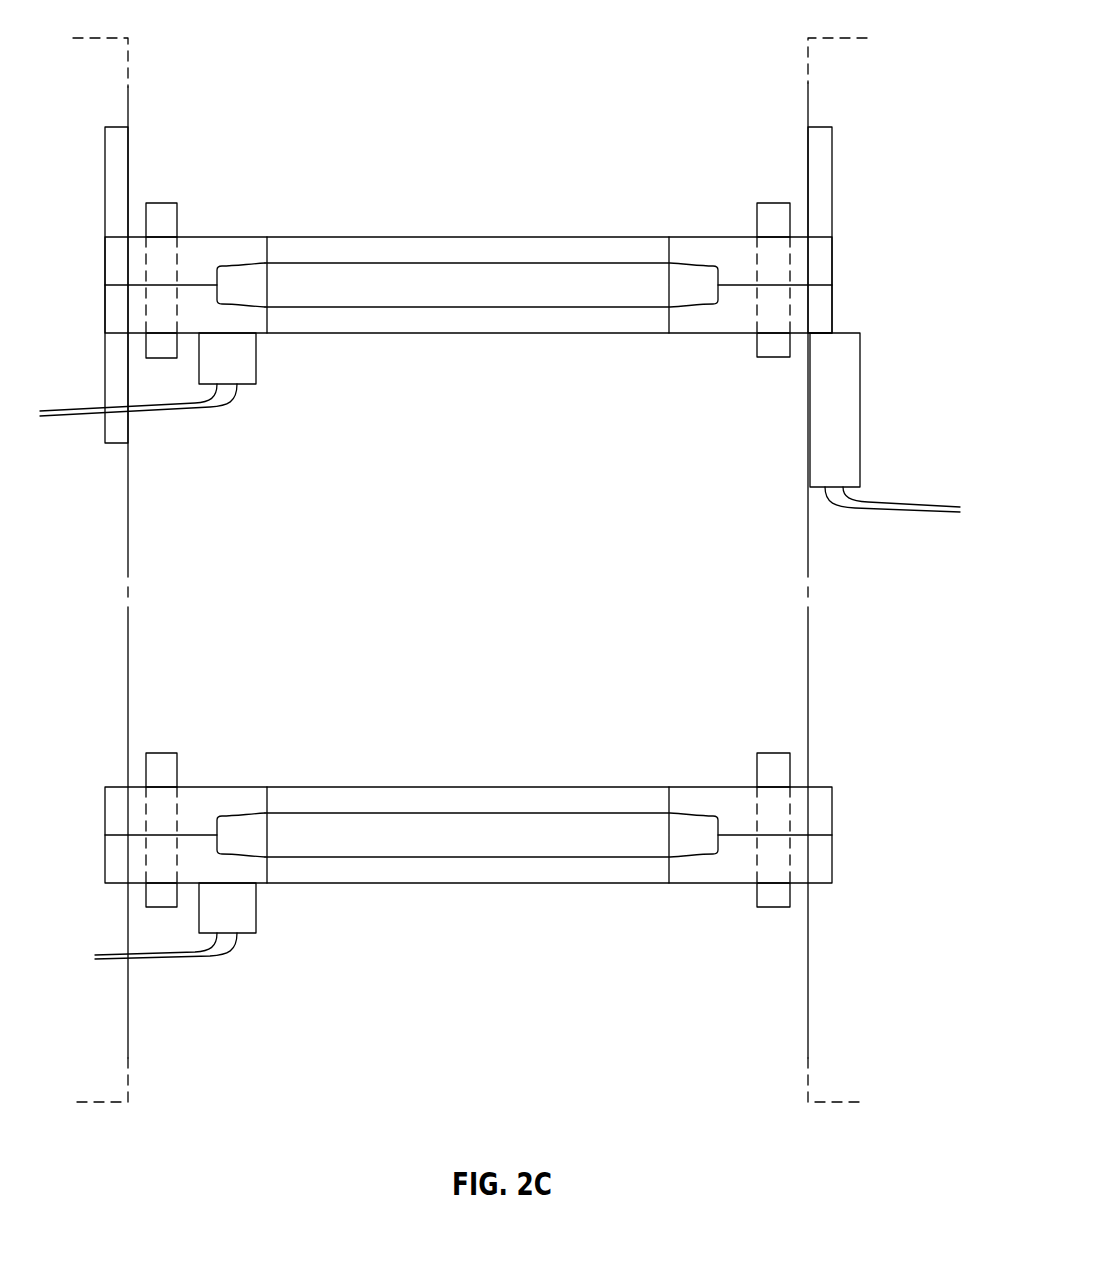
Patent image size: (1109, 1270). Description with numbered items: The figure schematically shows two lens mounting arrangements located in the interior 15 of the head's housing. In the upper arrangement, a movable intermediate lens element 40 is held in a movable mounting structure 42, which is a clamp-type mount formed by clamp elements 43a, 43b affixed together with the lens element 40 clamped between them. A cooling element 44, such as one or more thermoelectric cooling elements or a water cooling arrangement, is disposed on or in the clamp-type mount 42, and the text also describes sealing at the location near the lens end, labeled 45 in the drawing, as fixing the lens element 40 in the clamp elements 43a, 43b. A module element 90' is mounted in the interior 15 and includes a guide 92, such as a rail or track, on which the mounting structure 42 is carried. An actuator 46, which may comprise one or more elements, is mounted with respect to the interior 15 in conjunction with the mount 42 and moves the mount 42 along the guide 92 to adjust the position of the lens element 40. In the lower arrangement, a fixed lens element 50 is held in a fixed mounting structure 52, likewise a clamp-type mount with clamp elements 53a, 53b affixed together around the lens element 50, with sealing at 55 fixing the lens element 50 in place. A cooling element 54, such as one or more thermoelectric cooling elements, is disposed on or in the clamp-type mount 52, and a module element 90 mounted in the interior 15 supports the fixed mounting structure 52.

The interior 15 is at (694, 41).
The module element 90' is at (139, 570).
The module element 90 is at (801, 570).
The guide 92 is at (832, 183).
The intermediate lens element 40 is at (458, 262).
The movable mounting structure 42 is at (681, 358).
The clamp element 43a is at (740, 333).
The clamp element 43b is at (708, 237).
The cooling element 44 is at (242, 384).
The first light source end cap 45 is at (258, 264).
The actuator 46 is at (860, 412).
The fixed lens element 50 is at (458, 812).
The fixed mounting structure 52 is at (681, 908).
The clamp element 53a is at (740, 883).
The clamp element 53b is at (708, 787).
The cooling element 54 is at (242, 933).
The sealing 55 is at (258, 814).